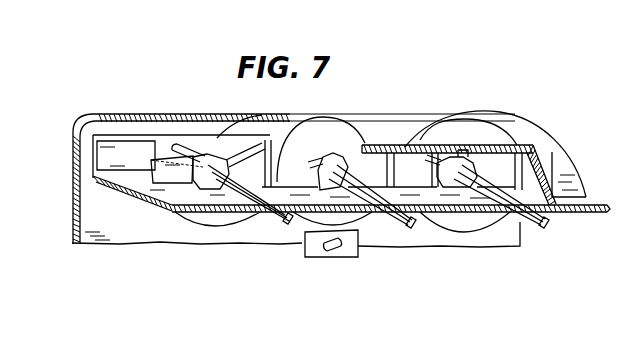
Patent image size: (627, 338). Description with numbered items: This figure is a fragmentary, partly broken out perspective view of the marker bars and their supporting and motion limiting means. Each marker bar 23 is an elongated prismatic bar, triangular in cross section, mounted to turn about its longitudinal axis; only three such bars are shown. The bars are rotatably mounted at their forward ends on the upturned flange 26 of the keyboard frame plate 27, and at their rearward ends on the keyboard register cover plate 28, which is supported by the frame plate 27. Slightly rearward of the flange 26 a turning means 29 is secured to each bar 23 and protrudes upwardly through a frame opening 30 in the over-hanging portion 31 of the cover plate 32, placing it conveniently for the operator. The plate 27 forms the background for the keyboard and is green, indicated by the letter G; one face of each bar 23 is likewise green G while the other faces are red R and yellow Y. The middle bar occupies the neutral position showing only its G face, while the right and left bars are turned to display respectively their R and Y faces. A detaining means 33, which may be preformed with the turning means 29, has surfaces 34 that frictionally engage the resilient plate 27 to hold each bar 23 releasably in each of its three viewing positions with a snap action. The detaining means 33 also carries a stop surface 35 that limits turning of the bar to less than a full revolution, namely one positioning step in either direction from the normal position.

The marker bar 23 is at (345, 257).
The upturned flange 26 is at (103, 156).
The keyboard frame plate 27 is at (131, 196).
The keyboard register cover plate 28 is at (329, 257).
The turning means 29 is at (281, 130).
The frame opening 30 is at (505, 143).
The over-hanging portion 31 is at (198, 119).
The cover plate 32 is at (108, 245).
The detaining means 33 is at (218, 156).
The surfaces 34 is at (321, 172).
The stop surface 35 is at (489, 175).
The yellow face Y is at (535, 228).
The green face G is at (193, 212).
The red face R is at (560, 222).